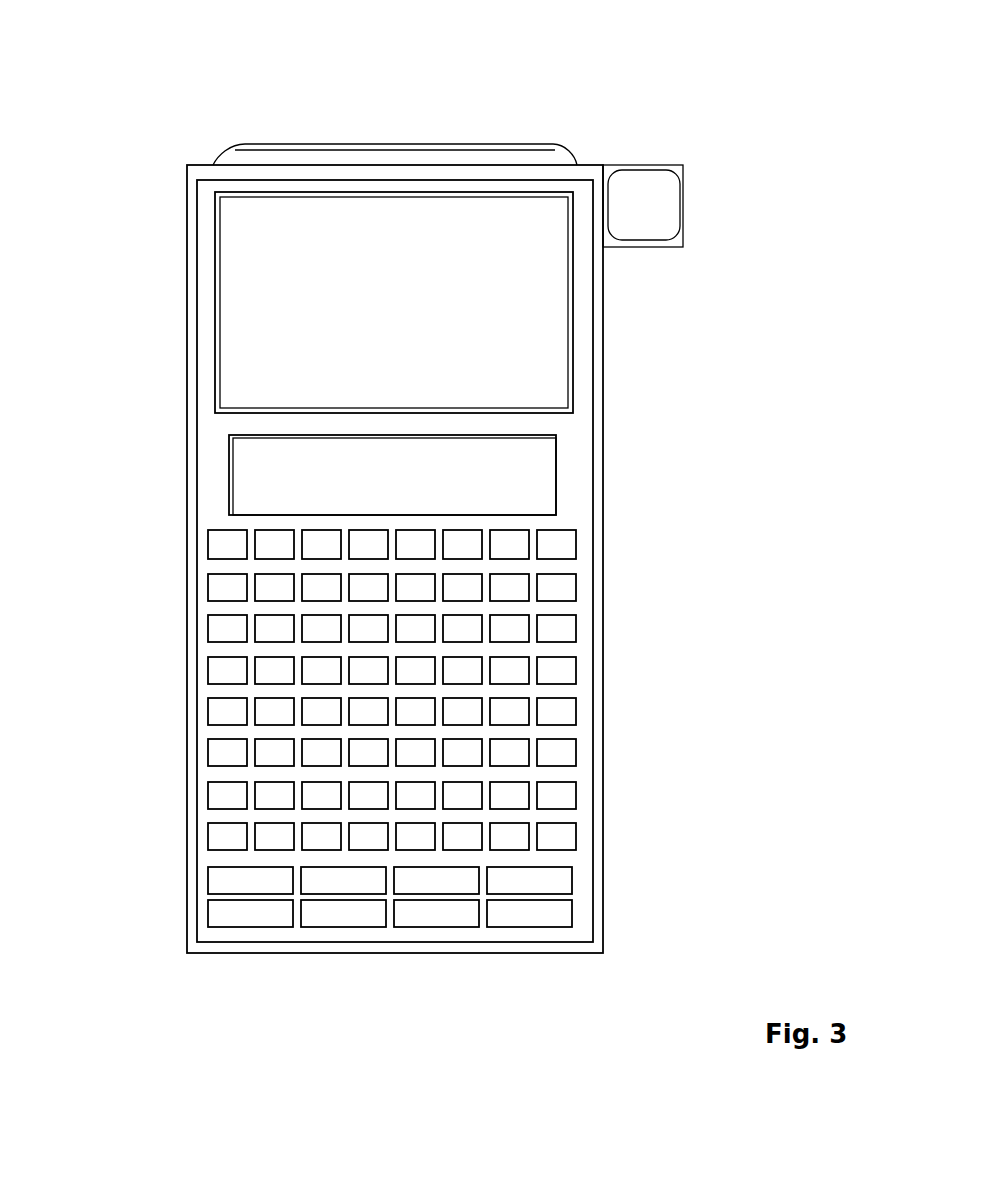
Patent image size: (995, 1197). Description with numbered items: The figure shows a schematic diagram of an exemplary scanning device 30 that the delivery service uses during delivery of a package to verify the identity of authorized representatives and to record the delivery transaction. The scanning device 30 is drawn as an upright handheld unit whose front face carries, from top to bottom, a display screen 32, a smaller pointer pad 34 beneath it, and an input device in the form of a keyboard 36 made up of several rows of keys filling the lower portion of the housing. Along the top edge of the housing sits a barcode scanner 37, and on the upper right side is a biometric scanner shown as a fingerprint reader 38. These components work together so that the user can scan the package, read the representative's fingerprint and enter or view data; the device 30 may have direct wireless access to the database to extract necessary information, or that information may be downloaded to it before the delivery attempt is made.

The scanning device 30 is at (145, 252).
The display screen 32 is at (573, 300).
The pointer pad 34 is at (556, 474).
The keyboard 36 is at (576, 752).
The barcode scanner 37 is at (233, 157).
The fingerprint reader 38 is at (683, 203).